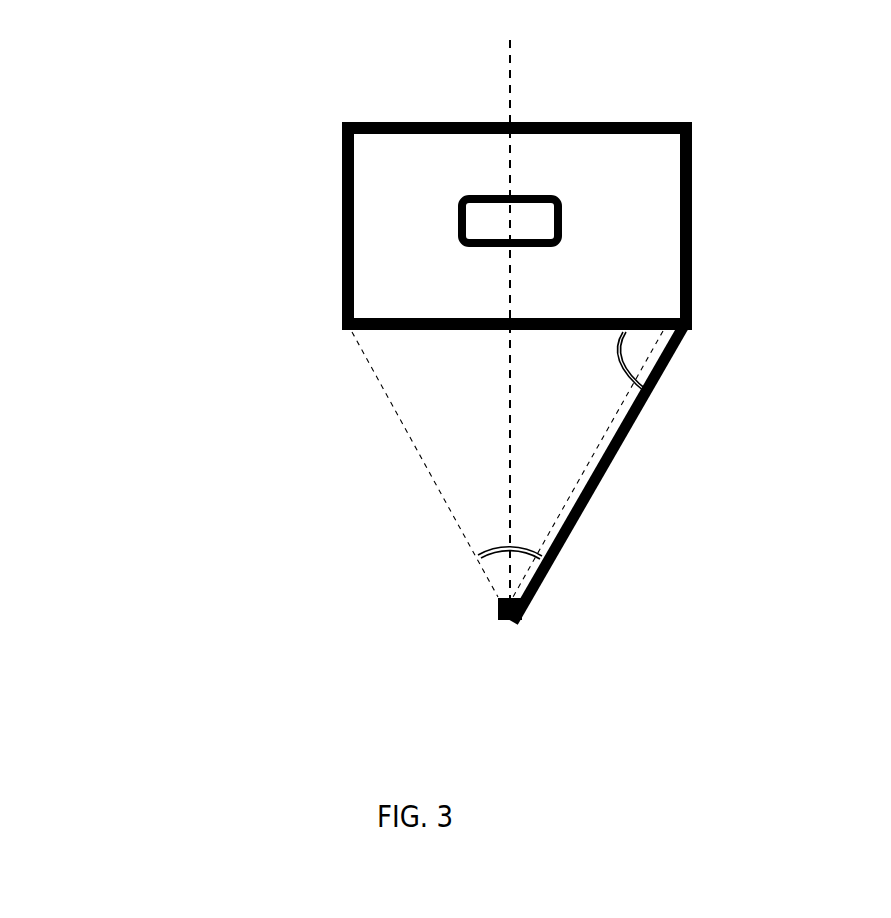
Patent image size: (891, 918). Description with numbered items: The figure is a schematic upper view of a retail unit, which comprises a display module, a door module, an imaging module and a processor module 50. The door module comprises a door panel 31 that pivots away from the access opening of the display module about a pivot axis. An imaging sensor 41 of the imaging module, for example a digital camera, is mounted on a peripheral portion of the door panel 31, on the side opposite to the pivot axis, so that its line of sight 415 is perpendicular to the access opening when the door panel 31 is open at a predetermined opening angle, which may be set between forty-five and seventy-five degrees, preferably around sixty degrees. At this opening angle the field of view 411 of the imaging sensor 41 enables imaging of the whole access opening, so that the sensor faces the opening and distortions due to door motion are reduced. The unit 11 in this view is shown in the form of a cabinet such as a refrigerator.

The housing 11 is at (753, 185).
The line of sight 415 is at (510, 59).
The processor module 50 is at (458, 220).
The door panel 31 is at (593, 497).
The imaging sensor 41 is at (498, 612).
The field of view 411 is at (488, 552).